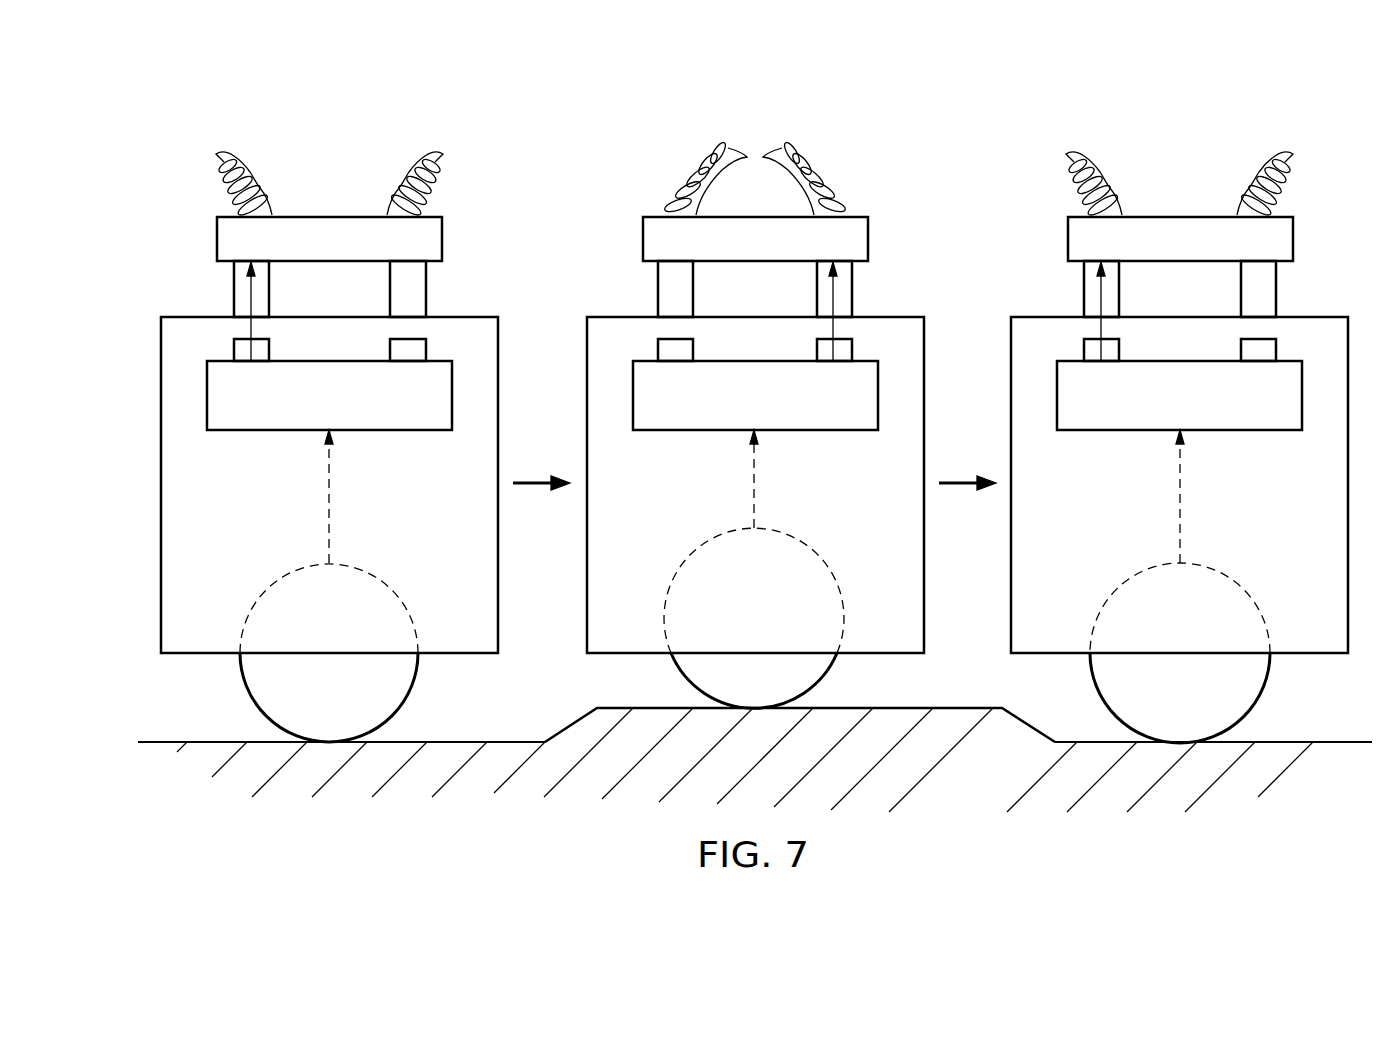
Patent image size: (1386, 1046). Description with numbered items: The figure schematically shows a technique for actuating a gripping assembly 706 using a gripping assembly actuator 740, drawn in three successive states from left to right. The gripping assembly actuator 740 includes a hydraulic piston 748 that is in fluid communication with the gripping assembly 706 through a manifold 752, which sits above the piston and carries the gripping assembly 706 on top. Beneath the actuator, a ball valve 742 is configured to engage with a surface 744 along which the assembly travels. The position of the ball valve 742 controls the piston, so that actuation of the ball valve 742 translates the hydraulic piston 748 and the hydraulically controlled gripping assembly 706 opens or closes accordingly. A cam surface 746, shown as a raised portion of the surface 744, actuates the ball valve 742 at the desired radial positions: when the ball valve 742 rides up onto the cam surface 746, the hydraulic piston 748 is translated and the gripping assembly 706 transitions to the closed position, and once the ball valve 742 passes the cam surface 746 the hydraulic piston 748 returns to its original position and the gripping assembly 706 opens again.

The gripping assembly 706 is at (326, 132).
The gripping assembly actuator 740 is at (472, 303).
The ball valve 742 is at (243, 688).
The surface 744 is at (447, 741).
The cam surface 746 is at (955, 708).
The hydraulic piston 748 is at (297, 431).
The manifold 752 is at (203, 294).